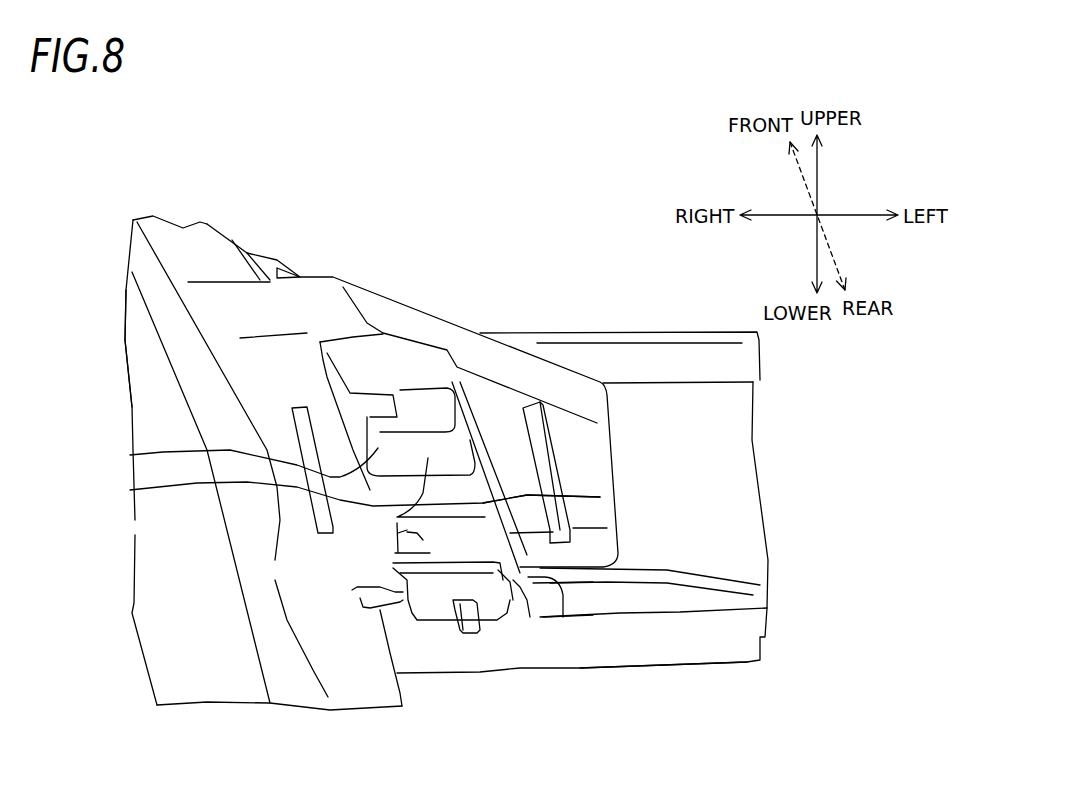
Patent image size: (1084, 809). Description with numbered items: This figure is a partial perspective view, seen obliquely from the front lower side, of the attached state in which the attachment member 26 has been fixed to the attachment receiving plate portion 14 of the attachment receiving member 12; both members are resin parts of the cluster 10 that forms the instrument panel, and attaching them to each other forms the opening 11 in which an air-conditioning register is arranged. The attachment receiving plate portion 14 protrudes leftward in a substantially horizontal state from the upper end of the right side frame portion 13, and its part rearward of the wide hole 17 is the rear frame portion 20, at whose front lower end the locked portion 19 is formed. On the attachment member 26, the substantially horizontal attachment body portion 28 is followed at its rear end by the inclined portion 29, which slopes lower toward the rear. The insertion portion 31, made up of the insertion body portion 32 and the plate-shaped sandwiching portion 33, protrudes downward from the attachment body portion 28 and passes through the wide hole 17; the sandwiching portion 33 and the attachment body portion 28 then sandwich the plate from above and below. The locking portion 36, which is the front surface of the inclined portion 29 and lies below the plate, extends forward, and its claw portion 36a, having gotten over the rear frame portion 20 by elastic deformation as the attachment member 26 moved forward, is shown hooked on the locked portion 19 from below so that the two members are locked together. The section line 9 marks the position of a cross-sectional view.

The section line IX-IX 9 is at (317, 257).
The cluster 10 is at (377, 278).
The opening 11 is at (756, 685).
The attachment receiving member 12 is at (119, 587).
The right side frame portion 13 is at (140, 408).
The attachment receiving plate portion 14 is at (603, 470).
The wide hole 17 is at (600, 497).
The locked portion 19 is at (563, 618).
The rear frame portion 20 is at (397, 540).
The attachment member 26 is at (705, 323).
The attachment body portion 28 is at (747, 357).
The inclined portion 29 is at (757, 633).
The insertion portion 31 is at (323, 476).
The insertion body portion 32 is at (346, 493).
The sandwiching portion 33 is at (137, 457).
The locking portion 36 is at (497, 622).
The claw portion 36a is at (352, 591).